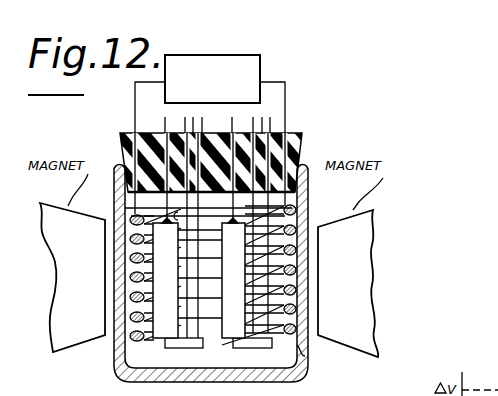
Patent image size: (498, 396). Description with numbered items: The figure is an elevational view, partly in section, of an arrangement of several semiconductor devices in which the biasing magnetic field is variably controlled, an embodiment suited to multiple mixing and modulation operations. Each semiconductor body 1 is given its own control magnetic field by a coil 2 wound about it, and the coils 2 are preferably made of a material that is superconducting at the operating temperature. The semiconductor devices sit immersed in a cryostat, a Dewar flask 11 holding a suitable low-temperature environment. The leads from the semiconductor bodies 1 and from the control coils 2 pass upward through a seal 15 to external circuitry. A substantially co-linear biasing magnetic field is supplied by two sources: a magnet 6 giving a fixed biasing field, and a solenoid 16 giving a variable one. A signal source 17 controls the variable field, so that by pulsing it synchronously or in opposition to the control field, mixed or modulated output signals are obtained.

The semiconductor body 1 is at (216, 338).
The coil 2 is at (156, 223).
The magnet 6 is at (92, 352).
The Dewar flask 11 is at (308, 195).
The seal 15 is at (302, 133).
The solenoid 16 is at (306, 356).
The signal source 17 is at (262, 73).